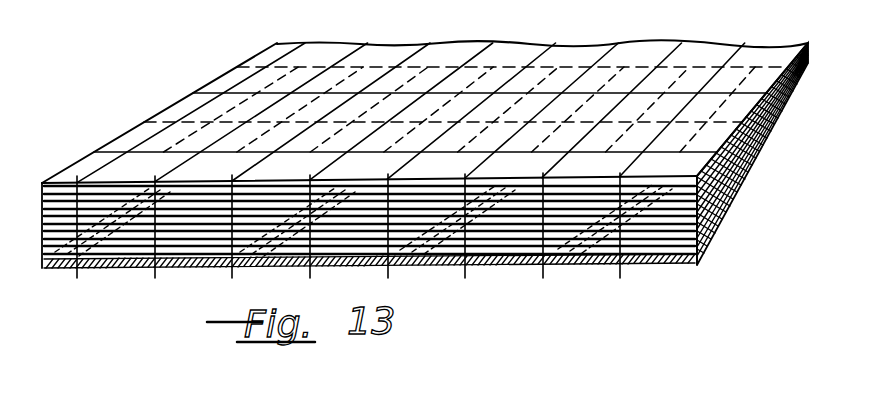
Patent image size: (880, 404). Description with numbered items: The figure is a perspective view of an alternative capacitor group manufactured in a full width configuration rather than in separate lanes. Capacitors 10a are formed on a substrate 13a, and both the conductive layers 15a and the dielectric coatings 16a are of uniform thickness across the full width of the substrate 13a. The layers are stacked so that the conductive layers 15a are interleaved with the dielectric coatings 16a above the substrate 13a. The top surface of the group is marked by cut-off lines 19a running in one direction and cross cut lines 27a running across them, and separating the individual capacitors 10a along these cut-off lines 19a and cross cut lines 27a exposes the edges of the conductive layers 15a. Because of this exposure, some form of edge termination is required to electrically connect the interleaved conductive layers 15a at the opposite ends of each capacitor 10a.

The capacitor 10a is at (245, 92).
The substrate 13a is at (450, 268).
The conductive layer 15a is at (524, 184).
The dielectric coating 16a is at (250, 192).
The cut-off line 19a is at (415, 152).
The cross cut line 27a is at (150, 153).